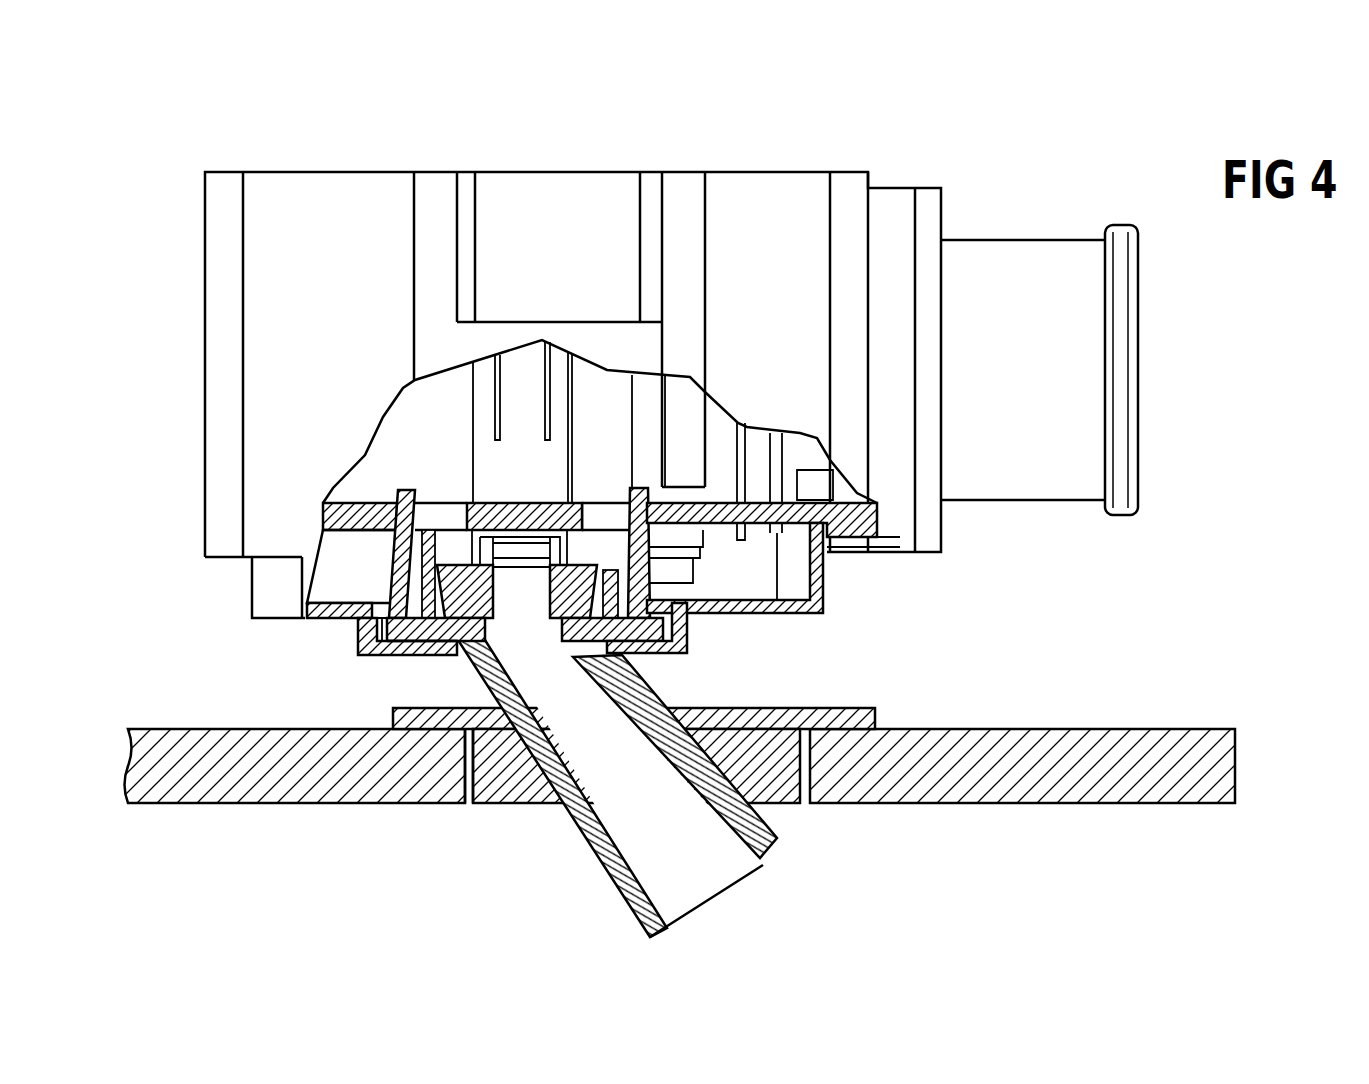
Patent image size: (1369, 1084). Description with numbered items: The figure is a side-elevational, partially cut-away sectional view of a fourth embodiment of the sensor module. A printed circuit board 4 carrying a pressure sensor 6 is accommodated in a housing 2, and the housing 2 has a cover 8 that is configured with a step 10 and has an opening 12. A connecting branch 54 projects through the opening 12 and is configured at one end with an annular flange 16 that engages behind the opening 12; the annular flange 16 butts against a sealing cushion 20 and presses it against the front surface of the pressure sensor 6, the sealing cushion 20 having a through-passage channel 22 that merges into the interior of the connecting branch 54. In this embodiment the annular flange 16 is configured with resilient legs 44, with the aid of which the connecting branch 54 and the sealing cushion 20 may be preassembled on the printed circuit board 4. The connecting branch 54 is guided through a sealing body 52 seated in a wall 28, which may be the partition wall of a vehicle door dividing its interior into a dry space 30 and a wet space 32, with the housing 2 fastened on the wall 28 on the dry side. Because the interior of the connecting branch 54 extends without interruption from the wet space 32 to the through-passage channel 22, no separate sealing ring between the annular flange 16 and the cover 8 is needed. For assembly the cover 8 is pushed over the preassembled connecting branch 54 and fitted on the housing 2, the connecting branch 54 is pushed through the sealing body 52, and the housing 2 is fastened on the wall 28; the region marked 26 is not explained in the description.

The housing 2 is at (671, 355).
The printed circuit board 4 is at (352, 523).
The pressure sensor 6 is at (600, 453).
The cover 8 is at (772, 562).
The step 10 is at (690, 639).
The opening 12 is at (399, 681).
The annular flange 16 is at (362, 651).
The sealing cushion 20 is at (525, 539).
The through-passage channel 22 is at (624, 767).
The wall opening 26 is at (424, 797).
The wall 28 is at (680, 721).
The dry space 30 is at (1211, 520).
The wet space 32 is at (1106, 880).
The resilient legs 44 is at (285, 576).
The sealing body 52 is at (634, 796).
The connecting branch 54 is at (617, 788).